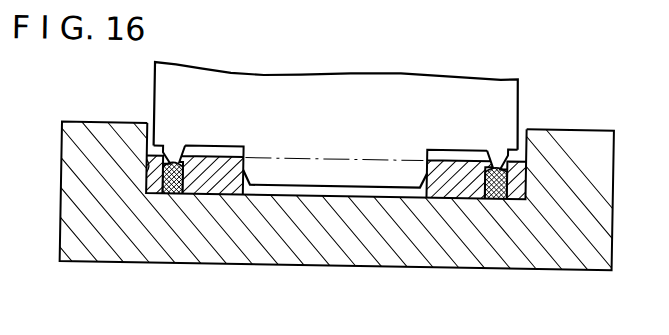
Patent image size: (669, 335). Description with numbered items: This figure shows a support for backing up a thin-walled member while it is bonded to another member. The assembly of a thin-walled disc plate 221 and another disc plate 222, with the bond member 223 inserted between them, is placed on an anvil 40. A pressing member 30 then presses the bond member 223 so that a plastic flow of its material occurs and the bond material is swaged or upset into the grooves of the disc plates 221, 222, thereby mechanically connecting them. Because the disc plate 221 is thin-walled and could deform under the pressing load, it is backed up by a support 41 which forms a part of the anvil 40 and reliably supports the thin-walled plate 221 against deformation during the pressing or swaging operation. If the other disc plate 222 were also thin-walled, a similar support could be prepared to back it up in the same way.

The pressing member 30 is at (157, 88).
The anvil 40 is at (69, 243).
The support 41 is at (147, 158).
The disc plate 221 is at (154, 186).
The disc plate 222 is at (230, 185).
The bond member 223 is at (174, 186).